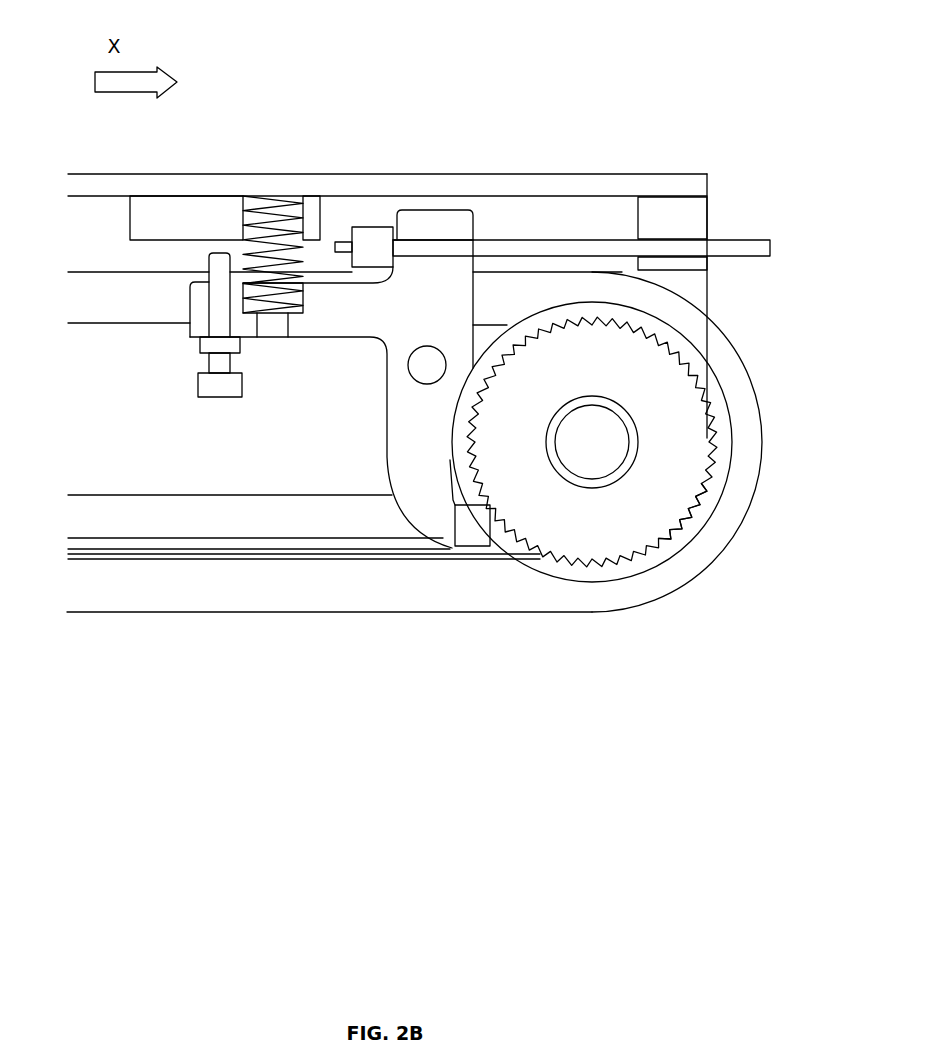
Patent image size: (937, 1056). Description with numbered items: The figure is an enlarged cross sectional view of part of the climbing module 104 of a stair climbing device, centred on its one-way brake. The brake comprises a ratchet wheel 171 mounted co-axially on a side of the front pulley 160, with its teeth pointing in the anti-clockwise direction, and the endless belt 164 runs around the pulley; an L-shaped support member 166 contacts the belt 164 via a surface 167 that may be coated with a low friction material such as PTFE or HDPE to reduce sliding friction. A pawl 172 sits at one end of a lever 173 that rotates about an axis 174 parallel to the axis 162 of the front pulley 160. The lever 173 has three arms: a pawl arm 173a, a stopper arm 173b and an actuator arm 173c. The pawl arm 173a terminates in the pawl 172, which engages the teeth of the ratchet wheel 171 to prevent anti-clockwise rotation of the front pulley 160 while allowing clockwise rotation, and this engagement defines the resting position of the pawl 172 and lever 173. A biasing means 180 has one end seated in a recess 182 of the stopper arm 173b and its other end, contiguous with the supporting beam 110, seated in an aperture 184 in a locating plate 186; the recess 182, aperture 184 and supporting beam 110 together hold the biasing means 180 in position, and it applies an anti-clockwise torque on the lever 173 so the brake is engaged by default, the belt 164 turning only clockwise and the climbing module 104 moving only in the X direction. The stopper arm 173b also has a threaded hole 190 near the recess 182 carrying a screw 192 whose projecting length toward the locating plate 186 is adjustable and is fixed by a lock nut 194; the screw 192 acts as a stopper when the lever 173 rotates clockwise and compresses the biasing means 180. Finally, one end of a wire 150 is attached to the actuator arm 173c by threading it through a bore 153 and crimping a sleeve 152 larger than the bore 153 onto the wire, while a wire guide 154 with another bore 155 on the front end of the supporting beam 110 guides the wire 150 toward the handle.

The climbing module 104 is at (373, 40).
The supporting beam 110 is at (688, 285).
The wire 150 is at (752, 248).
The sleeve 152 is at (370, 242).
The bore 153 is at (430, 238).
The wire guide 154 is at (665, 215).
The bore 155 is at (668, 240).
The front pulley 160 is at (713, 487).
The axis 162 is at (582, 452).
The endless belt 164 is at (745, 405).
The support member 166 is at (255, 515).
The surface 167 is at (270, 552).
The ratchet wheel 171 is at (684, 522).
The pawl 172 is at (467, 522).
The lever 173 is at (435, 393).
The pawl arm 173a is at (420, 438).
The stopper arm 173b is at (353, 310).
The actuator arm 173c is at (460, 222).
The axis 174 is at (420, 372).
The biasing means 180 is at (272, 225).
The recess 182 is at (298, 293).
The aperture 184 is at (297, 217).
The locating plate 186 is at (143, 208).
The threaded hole 190 is at (209, 302).
The screw 192 is at (222, 385).
The lock nut 194 is at (205, 343).